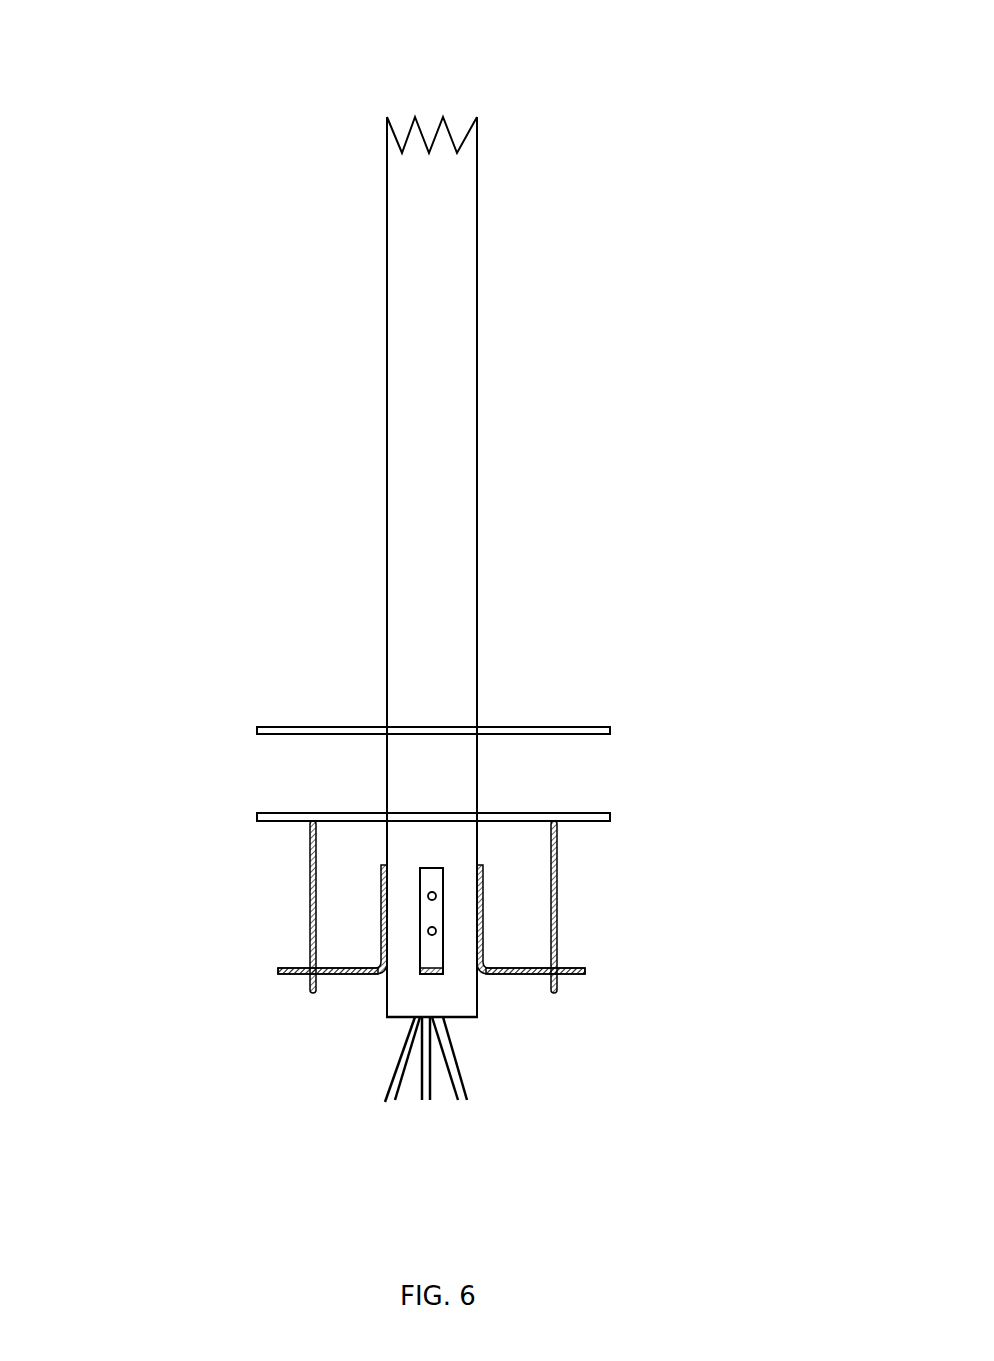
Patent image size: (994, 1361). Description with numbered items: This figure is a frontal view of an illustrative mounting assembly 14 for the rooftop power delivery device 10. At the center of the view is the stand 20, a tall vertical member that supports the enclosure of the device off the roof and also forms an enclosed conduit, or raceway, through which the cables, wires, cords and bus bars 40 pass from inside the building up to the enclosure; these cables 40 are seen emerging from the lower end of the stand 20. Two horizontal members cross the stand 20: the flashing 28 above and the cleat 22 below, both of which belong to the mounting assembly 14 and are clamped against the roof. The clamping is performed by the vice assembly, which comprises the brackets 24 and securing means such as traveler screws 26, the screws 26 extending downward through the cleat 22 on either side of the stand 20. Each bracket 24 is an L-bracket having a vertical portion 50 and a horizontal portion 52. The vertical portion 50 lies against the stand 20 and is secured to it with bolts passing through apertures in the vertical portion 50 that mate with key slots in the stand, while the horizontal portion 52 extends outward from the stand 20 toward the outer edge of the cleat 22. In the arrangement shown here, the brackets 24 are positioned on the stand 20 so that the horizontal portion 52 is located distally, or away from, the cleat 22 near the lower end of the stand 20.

The rooftop power delivery device 10 is at (377, 44).
The mounting assembly 14 is at (493, 716).
The stand 20 is at (386, 300).
The cleat 22 is at (257, 816).
The bracket 24 is at (308, 978).
The traveler screw 26 is at (310, 920).
The flashing 28 is at (267, 726).
The cables, wires, cords and bus bars 40 is at (460, 1103).
The vertical portion 50 is at (380, 897).
The horizontal portion 52 is at (347, 967).